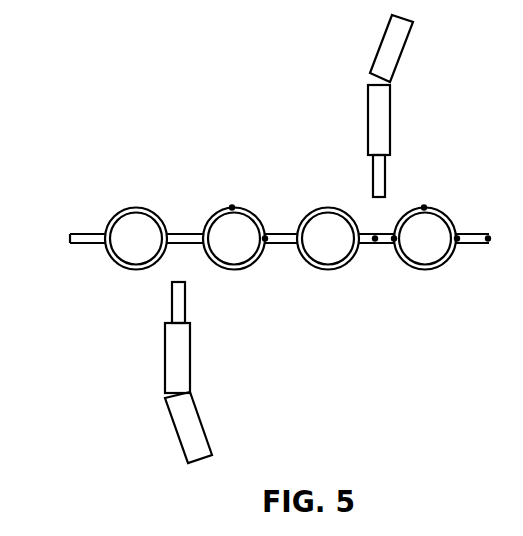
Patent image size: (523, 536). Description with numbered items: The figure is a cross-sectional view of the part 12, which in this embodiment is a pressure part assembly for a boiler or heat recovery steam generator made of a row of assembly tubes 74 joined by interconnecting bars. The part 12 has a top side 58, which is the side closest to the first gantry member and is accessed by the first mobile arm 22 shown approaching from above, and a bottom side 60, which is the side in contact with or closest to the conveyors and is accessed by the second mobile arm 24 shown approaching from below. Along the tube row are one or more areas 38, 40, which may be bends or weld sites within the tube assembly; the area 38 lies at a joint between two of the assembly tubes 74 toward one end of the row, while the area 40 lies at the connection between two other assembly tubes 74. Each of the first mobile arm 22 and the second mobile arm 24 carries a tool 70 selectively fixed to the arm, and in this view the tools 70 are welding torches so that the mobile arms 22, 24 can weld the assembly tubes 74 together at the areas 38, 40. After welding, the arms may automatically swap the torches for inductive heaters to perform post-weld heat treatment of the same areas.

The part 12 is at (60, 178).
The first mobile arm 22 is at (408, 50).
The second mobile arm 24 is at (164, 356).
The area 38 is at (366, 211).
The area 40 is at (191, 256).
The top side 58 is at (186, 137).
The bottom side 60 is at (289, 302).
The tool 70 is at (390, 170).
The assembly tube 74 is at (117, 212).